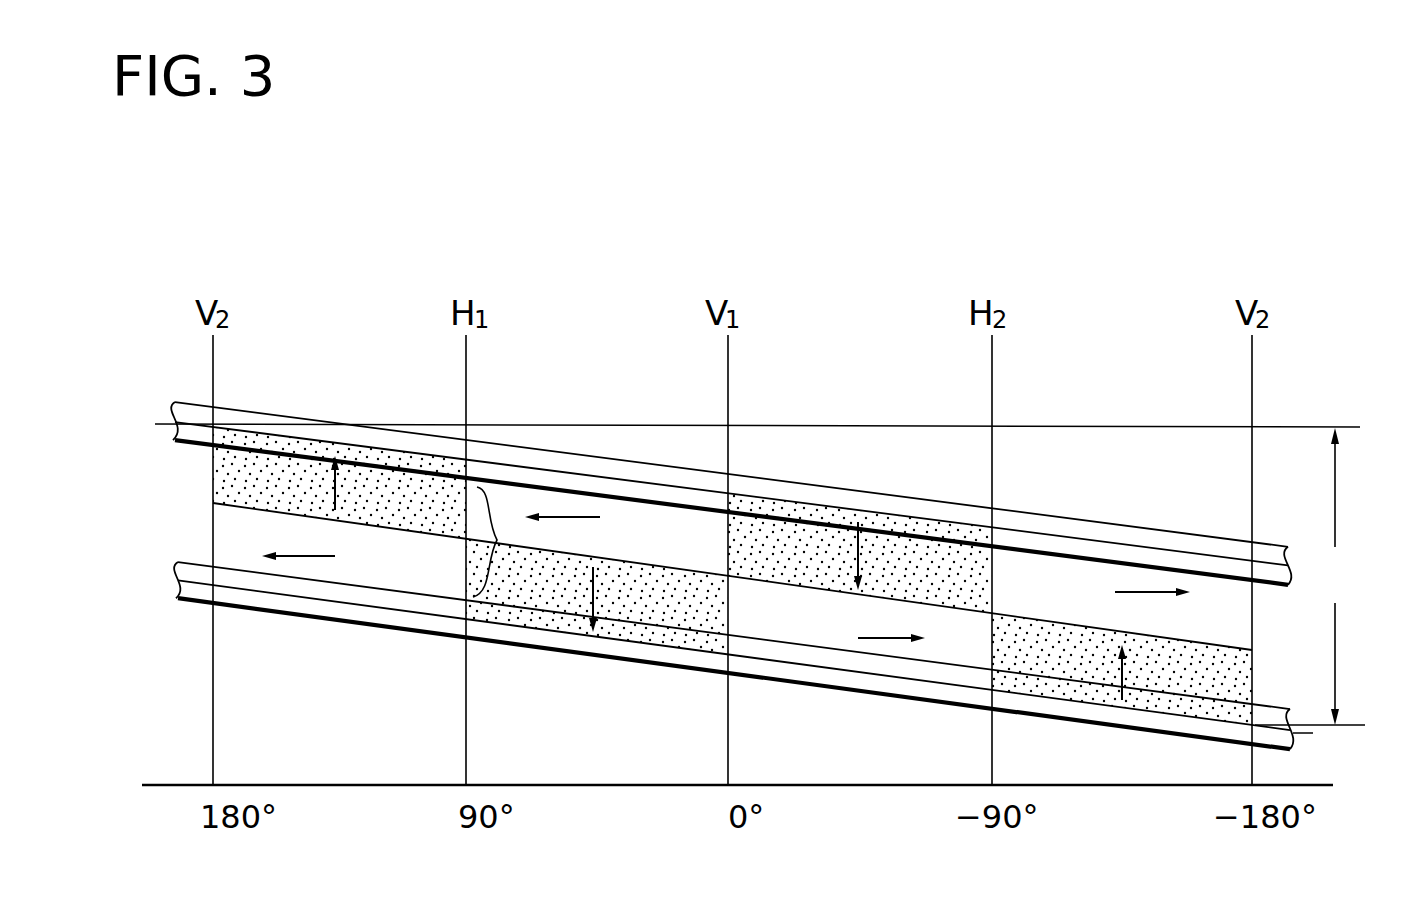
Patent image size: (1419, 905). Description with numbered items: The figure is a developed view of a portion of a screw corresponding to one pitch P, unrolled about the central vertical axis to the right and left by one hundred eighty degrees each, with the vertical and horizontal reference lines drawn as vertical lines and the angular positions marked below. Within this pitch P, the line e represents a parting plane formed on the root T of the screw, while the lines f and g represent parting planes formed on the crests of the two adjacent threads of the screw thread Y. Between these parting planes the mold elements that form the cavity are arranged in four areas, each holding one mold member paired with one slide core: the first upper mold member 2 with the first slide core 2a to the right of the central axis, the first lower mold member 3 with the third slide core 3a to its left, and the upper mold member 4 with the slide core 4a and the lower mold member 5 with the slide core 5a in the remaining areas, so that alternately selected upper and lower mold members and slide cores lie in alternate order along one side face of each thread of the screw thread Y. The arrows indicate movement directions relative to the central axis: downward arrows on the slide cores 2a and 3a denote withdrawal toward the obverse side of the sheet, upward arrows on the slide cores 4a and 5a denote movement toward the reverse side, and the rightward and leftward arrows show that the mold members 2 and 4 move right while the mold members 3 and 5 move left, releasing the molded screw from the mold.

The first upper mold member 2 is at (813, 641).
The first slide core 2a is at (820, 575).
The first lower mold member 3 is at (682, 553).
The third slide core 3a is at (685, 619).
The upper mold member 4 is at (1077, 606).
The slide core 4a is at (1083, 683).
The lower mold member 5 is at (410, 578).
The slide core 5a is at (415, 519).
The parting plane line f is at (230, 432).
The parting plane line e is at (236, 504).
The parting plane line g is at (253, 590).
The root T is at (497, 540).
The screw thread Y is at (1160, 535).
The pitch P is at (1336, 576).